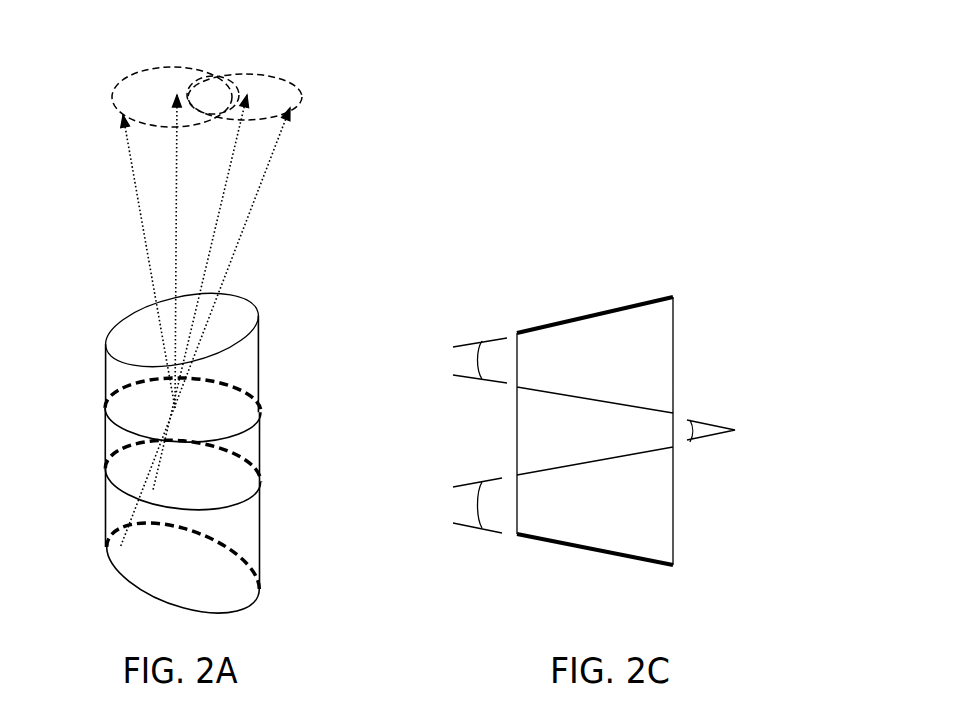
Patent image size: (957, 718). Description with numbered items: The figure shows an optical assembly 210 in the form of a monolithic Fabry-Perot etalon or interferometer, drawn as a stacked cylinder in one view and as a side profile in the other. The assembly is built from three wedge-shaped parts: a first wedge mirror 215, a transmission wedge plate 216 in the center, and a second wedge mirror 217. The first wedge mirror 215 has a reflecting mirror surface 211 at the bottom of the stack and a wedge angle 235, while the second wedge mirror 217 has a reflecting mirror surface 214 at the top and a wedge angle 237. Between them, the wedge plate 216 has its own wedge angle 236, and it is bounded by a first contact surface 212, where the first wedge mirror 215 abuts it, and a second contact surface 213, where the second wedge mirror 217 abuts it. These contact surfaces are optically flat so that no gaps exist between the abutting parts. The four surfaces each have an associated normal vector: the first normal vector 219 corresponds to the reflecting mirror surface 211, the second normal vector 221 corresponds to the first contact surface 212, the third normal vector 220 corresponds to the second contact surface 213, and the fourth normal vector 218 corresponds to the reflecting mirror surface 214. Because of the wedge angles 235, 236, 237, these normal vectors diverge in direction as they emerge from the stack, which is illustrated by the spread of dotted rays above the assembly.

In FIG. 2A, the optical assembly 210 is at (328, 115).
In FIG. 2A, the reflecting mirror surface 211 is at (112, 568).
In FIG. 2C, the reflecting mirror surface 211 is at (562, 545).
In FIG. 2A, the first contact surface 212 is at (260, 483).
In FIG. 2A, the second contact surface 213 is at (260, 405).
In FIG. 2A, the reflecting mirror surface 214 is at (260, 315).
In FIG. 2C, the reflecting mirror surface 214 is at (610, 308).
In FIG. 2A, the first wedge mirror 215 is at (103, 502).
In FIG. 2C, the first wedge mirror 215 is at (581, 517).
In FIG. 2A, the transmission wedge plate 216 is at (103, 440).
In FIG. 2C, the transmission wedge plate 216 is at (565, 440).
In FIG. 2A, the second wedge mirror 217 is at (105, 380).
In FIG. 2C, the second wedge mirror 217 is at (576, 364).
In FIG. 2A, the fourth normal vector 218 is at (148, 265).
In FIG. 2A, the first normal vector 219 is at (233, 253).
In FIG. 2A, the third normal vector 220 is at (176, 193).
In FIG. 2A, the second normal vector 221 is at (222, 208).
In FIG. 2C, the wedge angle 235 is at (472, 517).
In FIG. 2C, the wedge angle 236 is at (692, 438).
In FIG. 2C, the wedge angle 237 is at (480, 363).